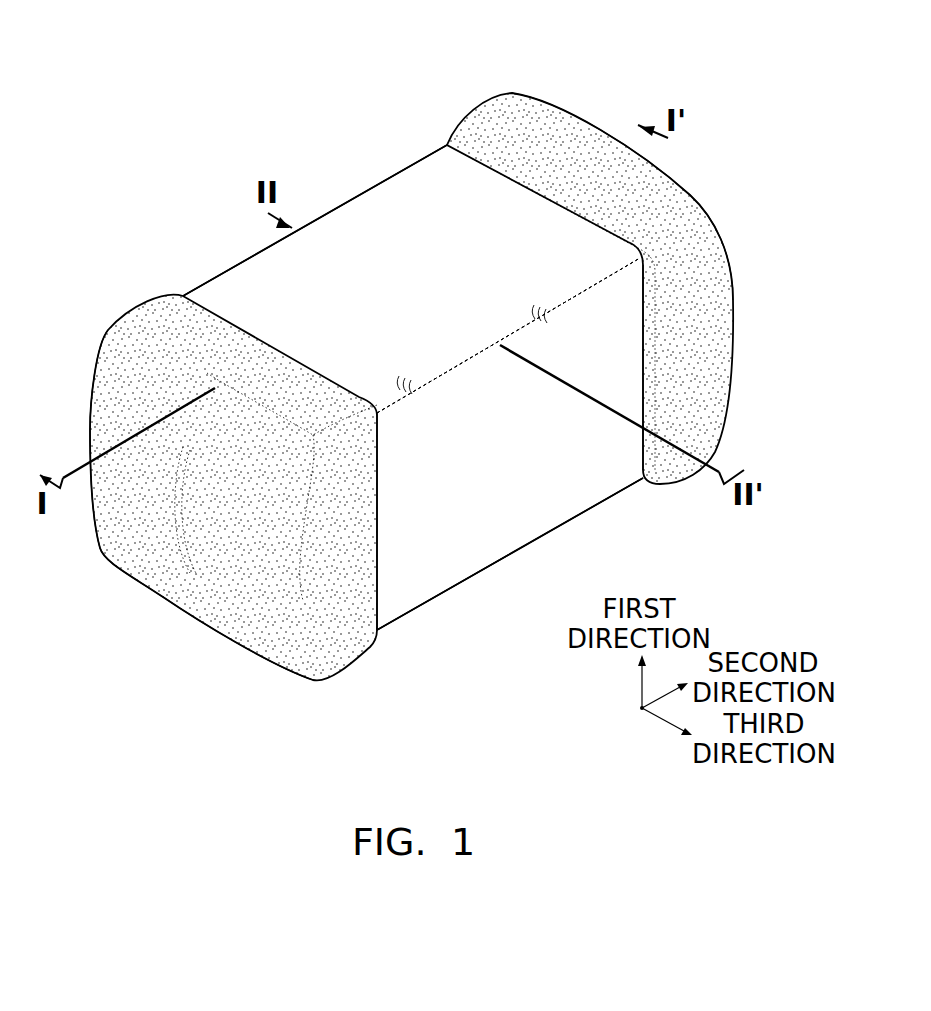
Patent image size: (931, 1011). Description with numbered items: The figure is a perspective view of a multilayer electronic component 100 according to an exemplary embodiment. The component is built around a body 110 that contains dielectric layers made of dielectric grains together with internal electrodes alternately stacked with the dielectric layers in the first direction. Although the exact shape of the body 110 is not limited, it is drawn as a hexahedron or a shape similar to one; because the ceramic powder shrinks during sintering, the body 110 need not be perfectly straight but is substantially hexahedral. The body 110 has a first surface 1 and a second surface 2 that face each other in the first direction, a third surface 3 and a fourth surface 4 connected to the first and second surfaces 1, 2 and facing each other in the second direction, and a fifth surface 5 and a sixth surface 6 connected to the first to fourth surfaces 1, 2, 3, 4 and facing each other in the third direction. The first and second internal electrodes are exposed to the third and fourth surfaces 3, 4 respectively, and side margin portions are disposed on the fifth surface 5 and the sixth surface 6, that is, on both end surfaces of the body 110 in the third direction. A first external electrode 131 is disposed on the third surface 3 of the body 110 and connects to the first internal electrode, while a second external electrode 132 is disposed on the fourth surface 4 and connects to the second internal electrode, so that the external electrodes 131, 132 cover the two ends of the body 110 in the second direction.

The multilayer electronic component 100 is at (244, 34).
The body 110 is at (347, 213).
The first external electrode 131 is at (147, 308).
The second external electrode 132 is at (490, 108).
The first surface 1 is at (474, 566).
The second surface 2 is at (397, 204).
The third surface 3 is at (164, 570).
The fourth surface 4 is at (577, 147).
The fifth surface 5 is at (243, 268).
The sixth surface 6 is at (527, 503).